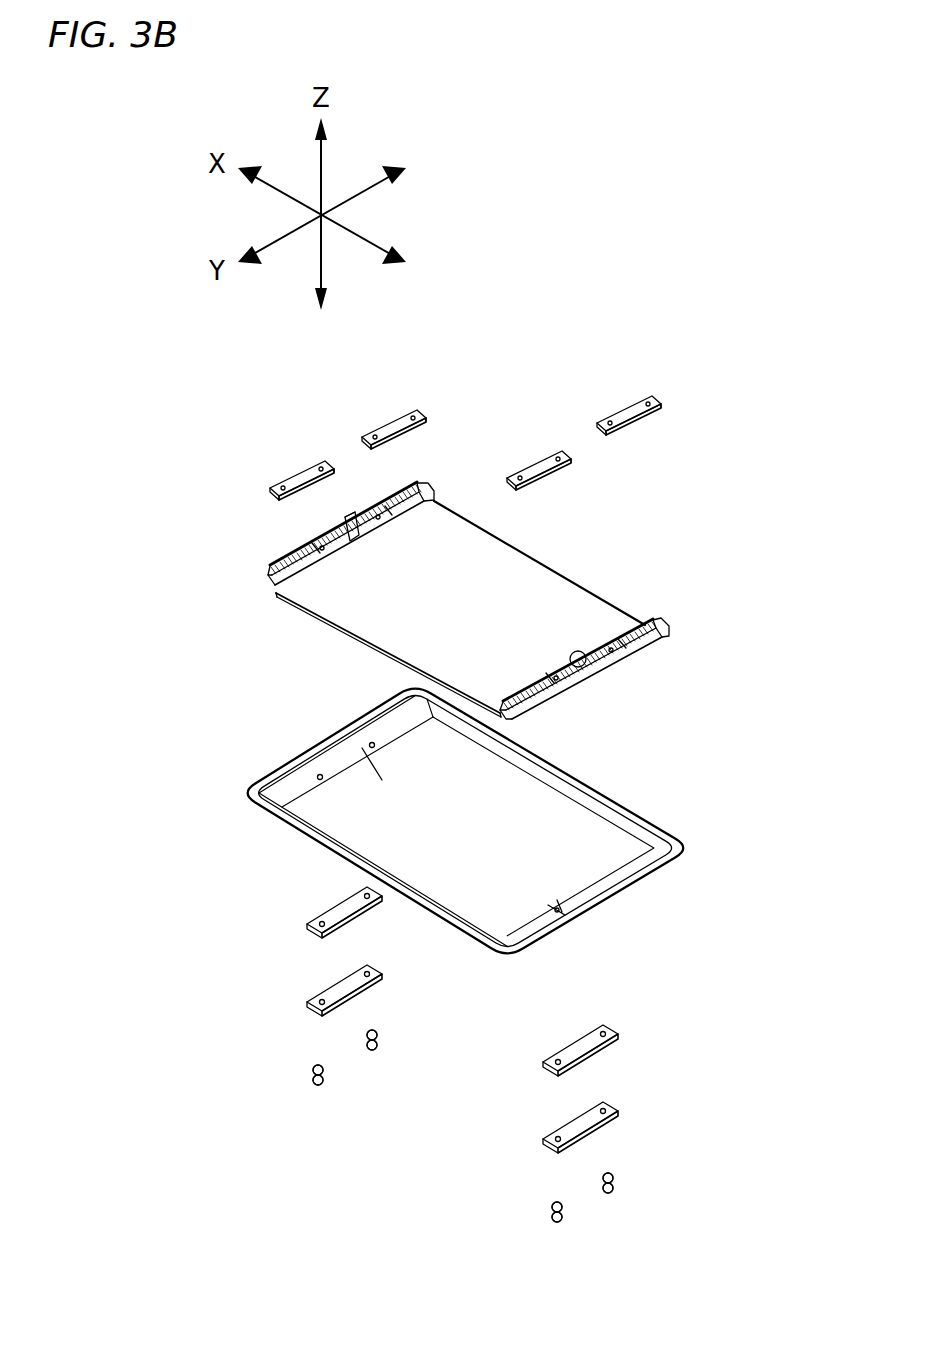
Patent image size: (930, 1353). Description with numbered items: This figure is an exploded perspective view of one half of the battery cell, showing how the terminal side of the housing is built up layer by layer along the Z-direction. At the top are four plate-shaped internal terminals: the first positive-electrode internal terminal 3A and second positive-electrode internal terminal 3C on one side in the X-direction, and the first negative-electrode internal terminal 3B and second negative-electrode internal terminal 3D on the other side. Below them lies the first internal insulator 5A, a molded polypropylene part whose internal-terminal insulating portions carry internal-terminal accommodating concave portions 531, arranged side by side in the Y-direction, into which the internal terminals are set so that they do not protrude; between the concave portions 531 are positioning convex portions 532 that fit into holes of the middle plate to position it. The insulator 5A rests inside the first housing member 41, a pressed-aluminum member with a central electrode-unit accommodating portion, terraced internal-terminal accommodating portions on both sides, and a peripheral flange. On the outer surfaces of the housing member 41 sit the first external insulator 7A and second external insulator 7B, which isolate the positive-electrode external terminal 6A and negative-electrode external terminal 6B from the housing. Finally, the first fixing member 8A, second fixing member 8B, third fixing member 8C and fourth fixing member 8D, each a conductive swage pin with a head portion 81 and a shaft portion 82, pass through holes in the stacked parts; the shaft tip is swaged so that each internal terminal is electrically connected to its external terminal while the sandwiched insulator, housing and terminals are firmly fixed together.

The first positive-electrode internal terminal 3A is at (400, 414).
The first negative-electrode internal terminal 3B is at (522, 464).
The second positive-electrode internal terminal 3C is at (298, 478).
The second negative-electrode internal terminal 3D is at (627, 407).
The first housing member 41 is at (355, 787).
The first internal insulator 5A is at (365, 615).
The internal-terminal accommodating concave portion 531 is at (424, 486).
The positioning convex portion 532 is at (352, 520).
The positive-electrode external terminal 6A is at (340, 987).
The negative-electrode external terminal 6B is at (578, 1122).
The first external insulator 7A is at (340, 907).
The second external insulator 7B is at (573, 1045).
The first fixing member 8A is at (373, 1051).
The second fixing member 8B is at (317, 1086).
The third fixing member 8C is at (554, 1223).
The fourth fixing member 8D is at (609, 1194).
The head portion 81 is at (315, 1081).
The shaft portion 82 is at (314, 1068).